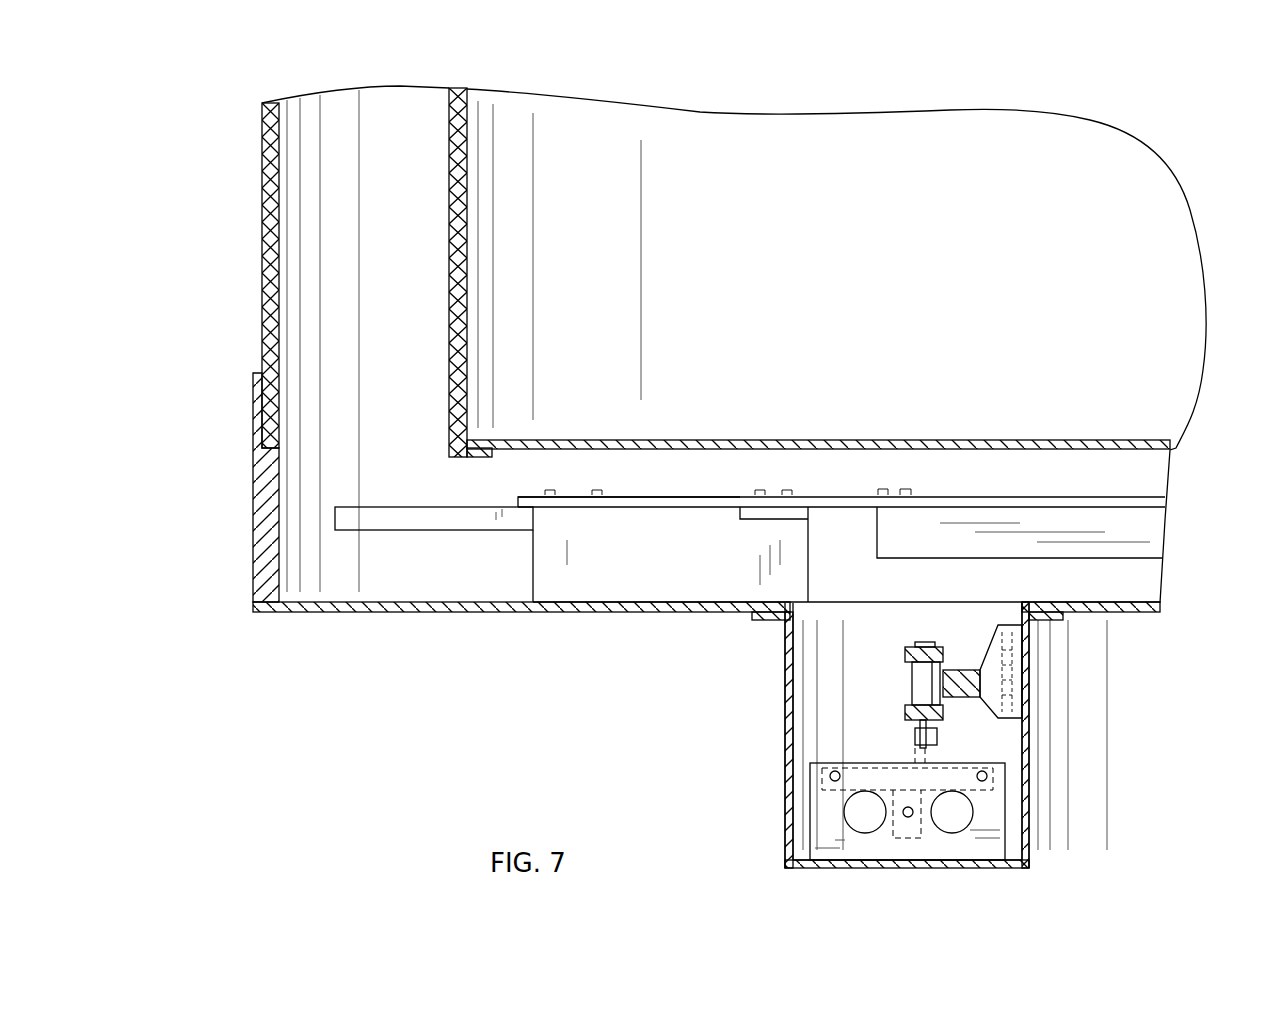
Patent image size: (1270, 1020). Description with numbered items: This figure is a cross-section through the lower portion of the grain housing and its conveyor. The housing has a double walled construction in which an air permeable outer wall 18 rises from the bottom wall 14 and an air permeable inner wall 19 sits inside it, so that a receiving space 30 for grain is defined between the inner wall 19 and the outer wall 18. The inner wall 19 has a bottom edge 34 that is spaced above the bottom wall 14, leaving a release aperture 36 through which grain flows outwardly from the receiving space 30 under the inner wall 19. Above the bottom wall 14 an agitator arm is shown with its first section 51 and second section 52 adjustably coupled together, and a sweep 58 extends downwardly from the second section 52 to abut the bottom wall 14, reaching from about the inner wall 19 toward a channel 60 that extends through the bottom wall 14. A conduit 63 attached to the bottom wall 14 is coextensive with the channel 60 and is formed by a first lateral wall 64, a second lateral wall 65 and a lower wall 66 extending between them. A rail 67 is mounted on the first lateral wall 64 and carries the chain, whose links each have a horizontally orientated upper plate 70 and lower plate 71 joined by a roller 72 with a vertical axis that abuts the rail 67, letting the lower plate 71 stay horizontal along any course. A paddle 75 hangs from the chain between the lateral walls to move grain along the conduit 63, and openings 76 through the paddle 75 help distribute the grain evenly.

The bottom wall 14 is at (350, 612).
The outer wall 18 is at (262, 243).
The inner wall 19 is at (467, 150).
The receiving space 30 is at (305, 290).
The bottom edge 34 is at (449, 455).
The release aperture 36 is at (508, 550).
The first section 51 is at (680, 497).
The second section 52 is at (410, 527).
The sweep 58 is at (603, 573).
The channel 60 is at (793, 603).
The conduit 63 is at (785, 868).
The first lateral wall 64 is at (1029, 780).
The second lateral wall 65 is at (787, 820).
The lower wall 66 is at (822, 870).
The rail 67 is at (985, 688).
The upper plate 70 is at (943, 650).
The lower plate 71 is at (943, 712).
The roller 72 is at (920, 682).
The paddle 75 is at (990, 840).
The opening 76 is at (845, 812).